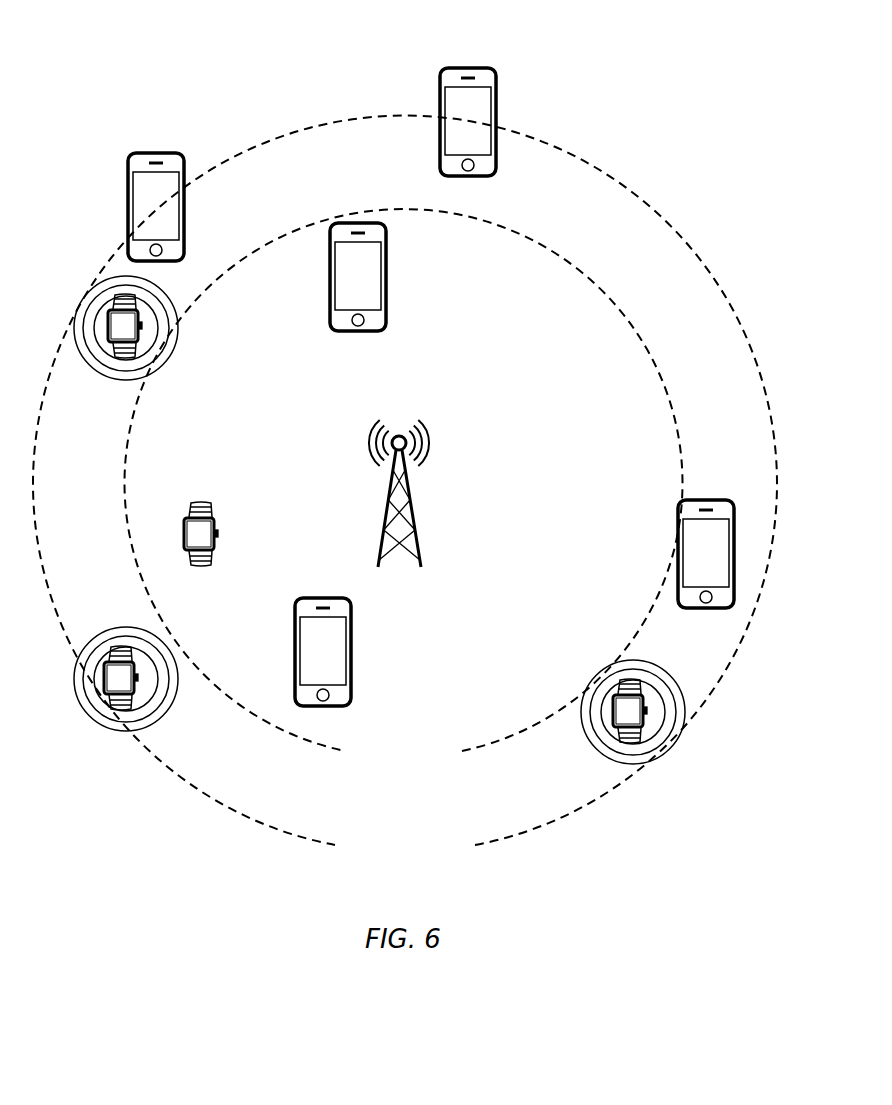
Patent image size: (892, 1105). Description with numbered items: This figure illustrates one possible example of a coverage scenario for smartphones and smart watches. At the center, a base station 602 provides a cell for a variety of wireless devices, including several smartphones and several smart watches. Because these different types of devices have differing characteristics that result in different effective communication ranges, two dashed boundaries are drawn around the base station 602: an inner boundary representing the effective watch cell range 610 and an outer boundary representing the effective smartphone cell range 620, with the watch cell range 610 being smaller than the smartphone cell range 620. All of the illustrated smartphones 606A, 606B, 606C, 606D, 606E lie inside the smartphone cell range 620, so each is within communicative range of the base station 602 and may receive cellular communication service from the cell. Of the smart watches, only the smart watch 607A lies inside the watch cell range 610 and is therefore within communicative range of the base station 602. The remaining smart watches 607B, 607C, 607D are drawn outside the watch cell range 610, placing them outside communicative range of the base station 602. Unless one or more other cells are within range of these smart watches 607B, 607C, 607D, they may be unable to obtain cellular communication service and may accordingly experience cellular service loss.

The base station 602 is at (413, 525).
The smartphone 606A is at (312, 597).
The smartphone 606B is at (146, 153).
The smartphone 606C is at (463, 68).
The smartphone 606D is at (710, 500).
The smartphone 606E is at (388, 287).
The smart watch 607A is at (222, 511).
The smart watch 607B is at (96, 373).
The smart watch 607C is at (105, 627).
The smart watch 607D is at (581, 749).
The watch cell range 610 is at (404, 496).
The smartphone cell range 620 is at (405, 503).